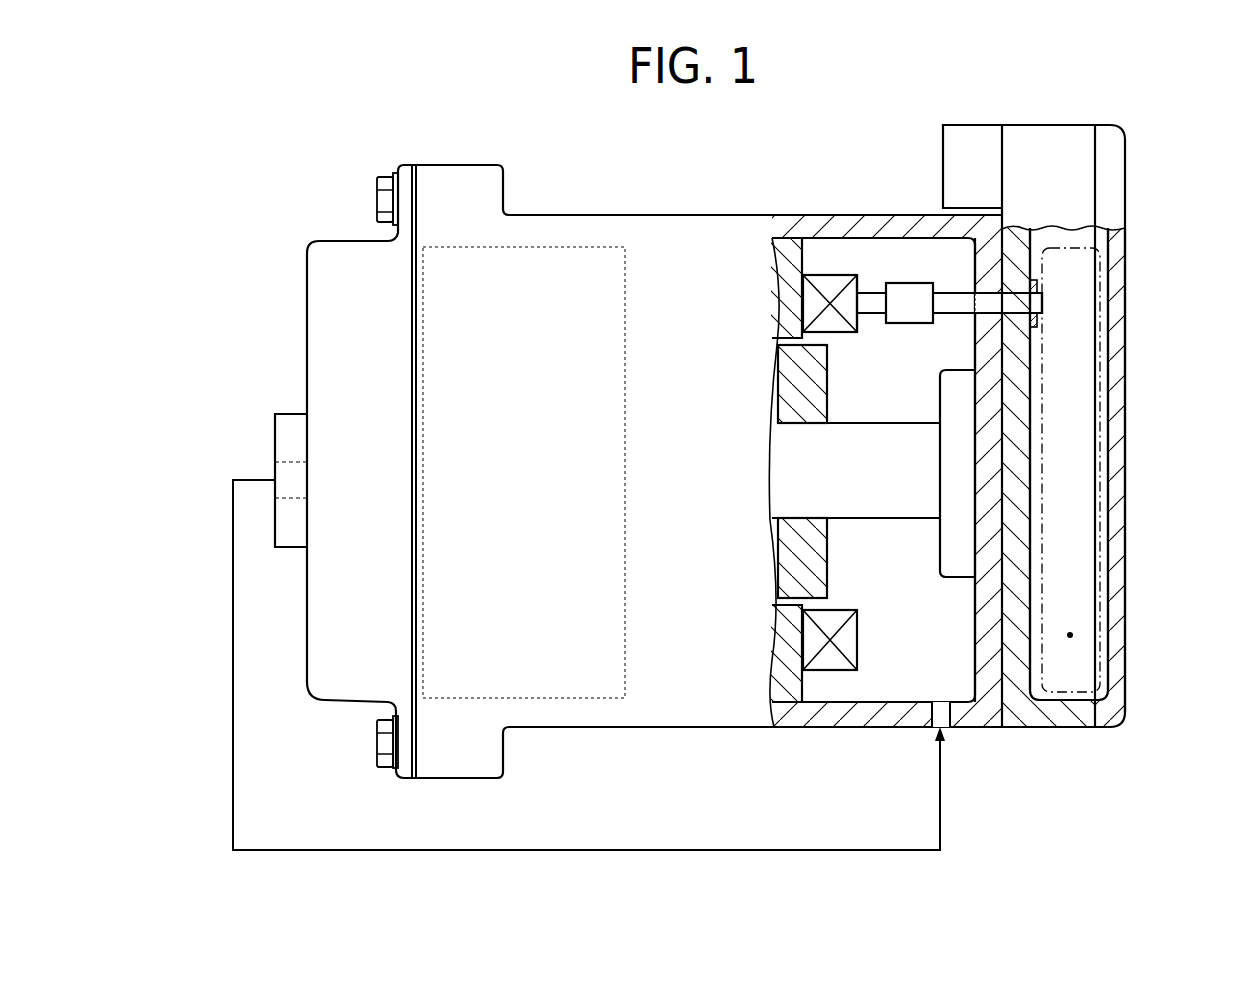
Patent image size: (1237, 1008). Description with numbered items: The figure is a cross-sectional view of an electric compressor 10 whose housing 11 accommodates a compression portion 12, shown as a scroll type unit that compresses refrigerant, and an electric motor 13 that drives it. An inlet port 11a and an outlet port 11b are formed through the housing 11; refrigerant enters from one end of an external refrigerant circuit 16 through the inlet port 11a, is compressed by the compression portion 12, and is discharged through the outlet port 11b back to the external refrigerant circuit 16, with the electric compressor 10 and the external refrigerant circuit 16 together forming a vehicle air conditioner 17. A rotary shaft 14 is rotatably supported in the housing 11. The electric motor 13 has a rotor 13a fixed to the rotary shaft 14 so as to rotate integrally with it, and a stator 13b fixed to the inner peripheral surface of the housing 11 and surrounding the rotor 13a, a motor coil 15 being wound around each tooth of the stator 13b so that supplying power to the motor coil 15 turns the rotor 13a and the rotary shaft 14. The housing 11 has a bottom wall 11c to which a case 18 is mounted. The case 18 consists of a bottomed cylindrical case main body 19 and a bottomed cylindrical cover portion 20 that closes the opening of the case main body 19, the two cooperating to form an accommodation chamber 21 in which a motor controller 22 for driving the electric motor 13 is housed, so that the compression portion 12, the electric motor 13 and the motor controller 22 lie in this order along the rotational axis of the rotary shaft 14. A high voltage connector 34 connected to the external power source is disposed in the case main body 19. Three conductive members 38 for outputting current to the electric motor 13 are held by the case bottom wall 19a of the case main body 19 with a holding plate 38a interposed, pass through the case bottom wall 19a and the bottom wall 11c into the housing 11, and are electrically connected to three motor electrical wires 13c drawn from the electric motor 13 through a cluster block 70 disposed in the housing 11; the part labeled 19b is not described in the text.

The electric compressor 10 is at (337, 211).
The housing 11 is at (655, 213).
The inlet port 11a is at (944, 703).
The outlet port 11b is at (275, 471).
The bottom wall 11c is at (983, 268).
The compression portion 12 is at (571, 246).
The electric motor 13 is at (801, 258).
The rotor 13a is at (822, 386).
The stator 13b is at (792, 262).
The motor electrical wires 13c is at (876, 294).
The rotary shaft 14 is at (870, 505).
The motor coil 15 is at (853, 321).
The external refrigerant circuit 16 is at (942, 832).
The vehicle air conditioner 17 is at (956, 851).
The case 18 is at (1165, 812).
The case main body 19 is at (1072, 730).
The case bottom wall 19a is at (1012, 607).
The bottom wall 19b is at (1038, 730).
The cover portion 20 is at (1113, 730).
The accommodation chamber 21 is at (1073, 635).
The motor controller 22 is at (1115, 372).
The high voltage connector 34 is at (943, 162).
The conductive members 38 is at (1043, 300).
The holding plate 38a is at (1036, 288).
The cluster block 70 is at (912, 324).